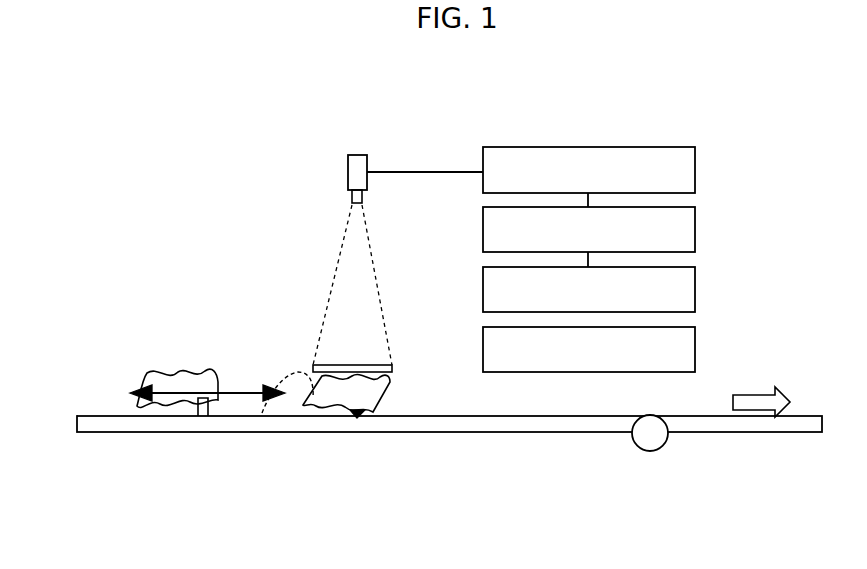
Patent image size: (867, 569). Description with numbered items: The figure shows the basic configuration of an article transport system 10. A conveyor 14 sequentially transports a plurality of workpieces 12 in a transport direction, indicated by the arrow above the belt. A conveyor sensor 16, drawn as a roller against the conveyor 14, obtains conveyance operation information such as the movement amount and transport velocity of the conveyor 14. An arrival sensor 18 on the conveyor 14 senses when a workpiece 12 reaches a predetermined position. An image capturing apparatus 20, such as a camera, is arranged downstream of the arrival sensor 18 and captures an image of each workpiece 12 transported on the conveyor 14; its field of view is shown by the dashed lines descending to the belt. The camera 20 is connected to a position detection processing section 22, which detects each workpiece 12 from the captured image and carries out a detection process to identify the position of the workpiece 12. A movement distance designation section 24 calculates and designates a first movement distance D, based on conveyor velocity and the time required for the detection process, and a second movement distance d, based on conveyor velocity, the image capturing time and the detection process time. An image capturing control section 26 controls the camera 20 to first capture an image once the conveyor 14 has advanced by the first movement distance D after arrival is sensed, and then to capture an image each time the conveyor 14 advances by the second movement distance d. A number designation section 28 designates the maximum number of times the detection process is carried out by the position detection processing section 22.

The article transport system 10 is at (150, 201).
The workpiece 12 is at (150, 385).
The conveyor 14 is at (757, 432).
The conveyor sensor 16 is at (661, 449).
The arrival sensor 18 is at (220, 432).
The image capturing apparatus 20 is at (348, 166).
The position detection processing section 22 is at (695, 167).
The movement distance designation section 24 is at (695, 229).
The image capturing control section 26 is at (695, 282).
The number designation section 28 is at (695, 344).
The first movement distance D is at (236, 392).
The second movement distance d is at (360, 432).